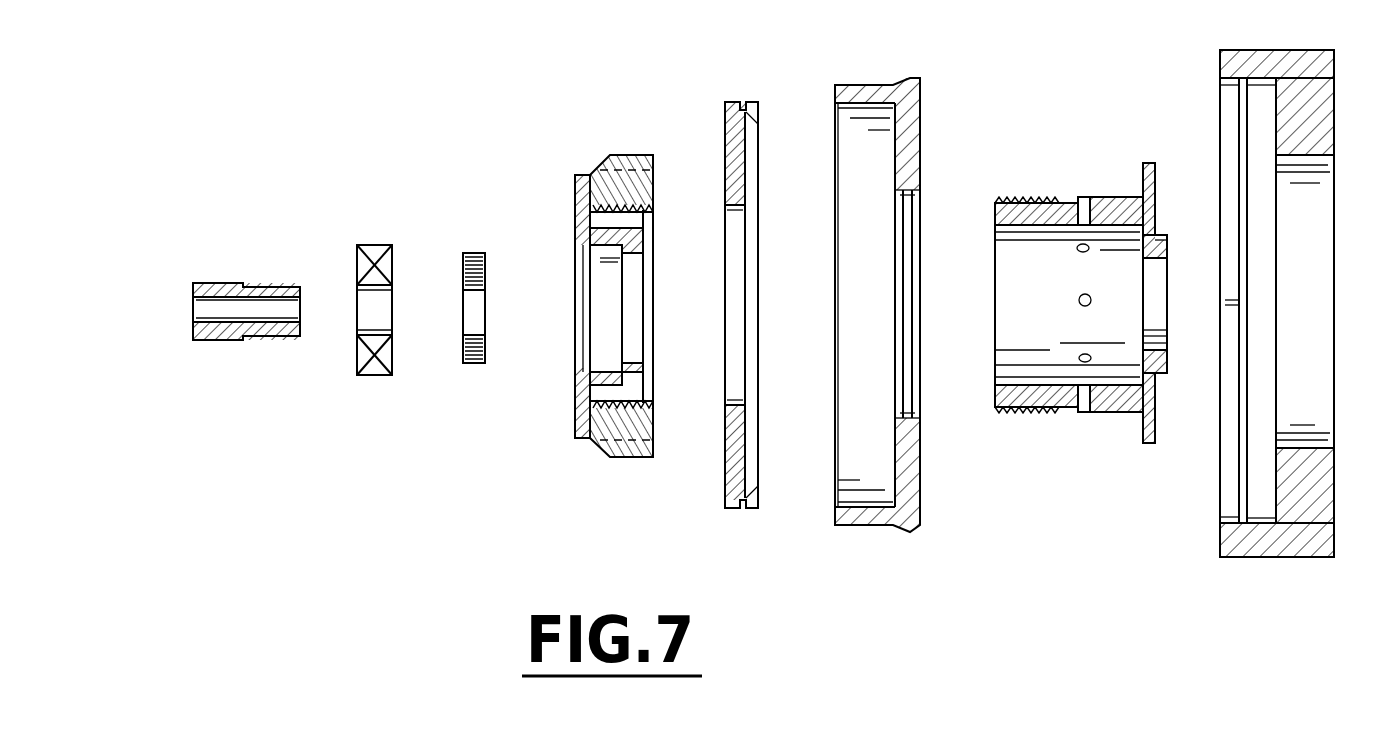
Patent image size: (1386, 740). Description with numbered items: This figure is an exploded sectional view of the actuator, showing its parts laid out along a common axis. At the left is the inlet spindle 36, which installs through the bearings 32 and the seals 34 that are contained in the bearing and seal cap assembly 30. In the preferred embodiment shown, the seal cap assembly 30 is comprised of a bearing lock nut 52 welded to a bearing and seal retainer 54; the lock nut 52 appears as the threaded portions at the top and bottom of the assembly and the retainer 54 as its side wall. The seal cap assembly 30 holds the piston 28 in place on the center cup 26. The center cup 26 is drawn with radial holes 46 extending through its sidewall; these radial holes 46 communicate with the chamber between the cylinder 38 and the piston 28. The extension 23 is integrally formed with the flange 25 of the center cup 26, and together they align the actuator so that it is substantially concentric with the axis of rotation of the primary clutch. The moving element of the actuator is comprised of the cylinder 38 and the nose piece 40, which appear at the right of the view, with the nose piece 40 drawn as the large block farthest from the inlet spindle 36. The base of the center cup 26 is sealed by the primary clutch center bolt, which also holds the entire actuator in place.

The extension 23 is at (1168, 268).
The flange 25 is at (1148, 165).
The center cup 26 is at (1168, 358).
The piston 28 is at (725, 440).
The seal cap assembly 30 is at (580, 310).
The bearings 32 is at (378, 362).
The seals 34 is at (470, 365).
The inlet spindle 36 is at (194, 324).
The cylinder 38 is at (912, 478).
The nose piece 40 is at (1220, 538).
The radial holes 46 is at (1085, 410).
The bearing lock nut 52 is at (633, 155).
The bearing and seal retainer 54 is at (576, 200).